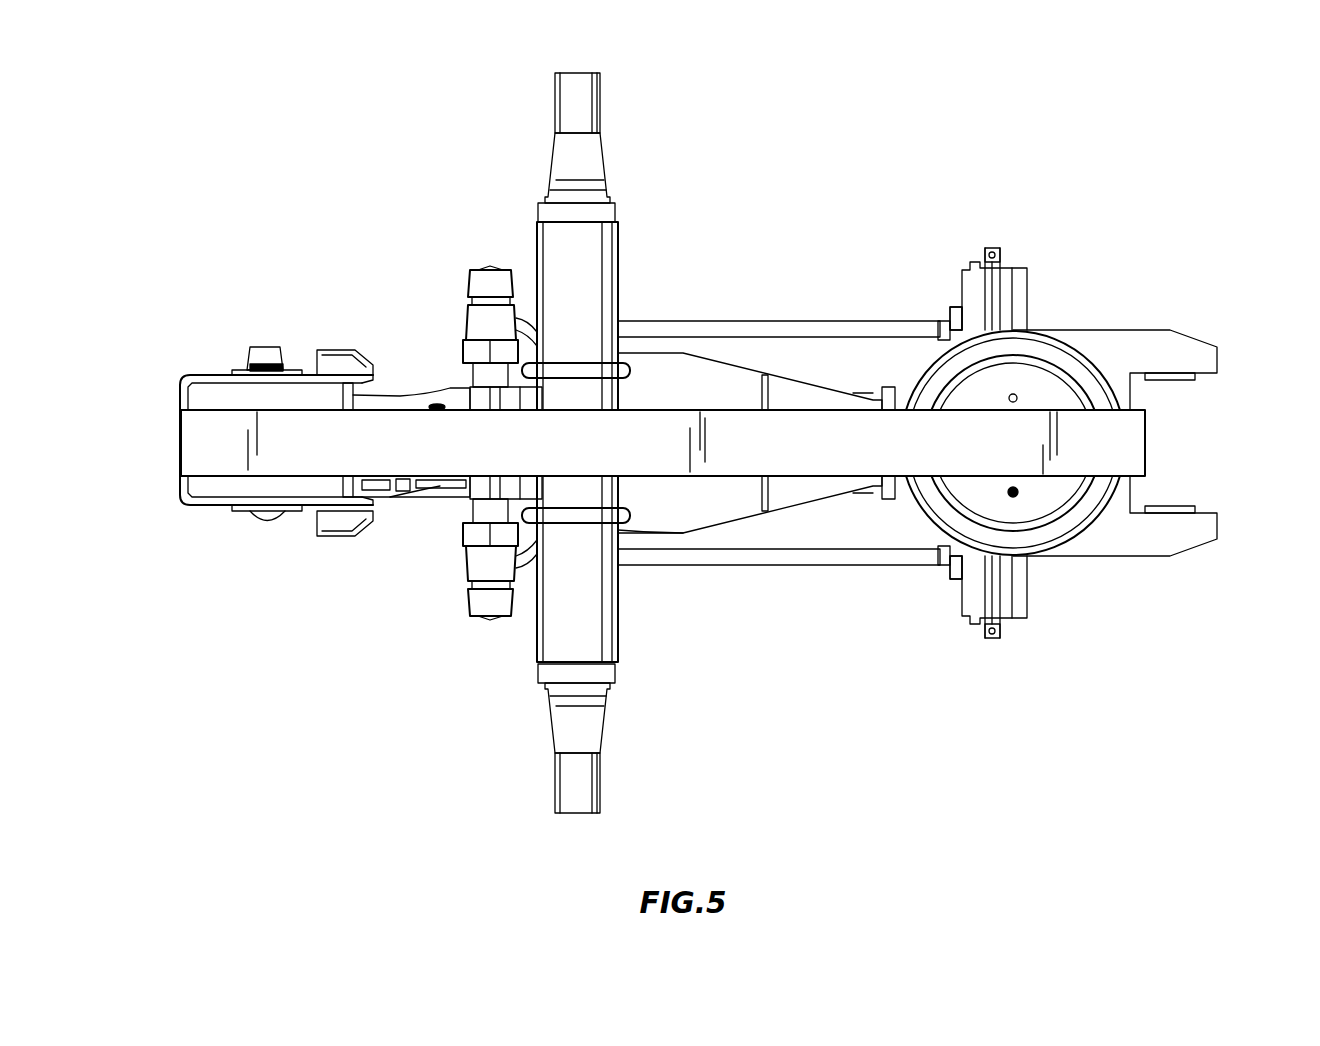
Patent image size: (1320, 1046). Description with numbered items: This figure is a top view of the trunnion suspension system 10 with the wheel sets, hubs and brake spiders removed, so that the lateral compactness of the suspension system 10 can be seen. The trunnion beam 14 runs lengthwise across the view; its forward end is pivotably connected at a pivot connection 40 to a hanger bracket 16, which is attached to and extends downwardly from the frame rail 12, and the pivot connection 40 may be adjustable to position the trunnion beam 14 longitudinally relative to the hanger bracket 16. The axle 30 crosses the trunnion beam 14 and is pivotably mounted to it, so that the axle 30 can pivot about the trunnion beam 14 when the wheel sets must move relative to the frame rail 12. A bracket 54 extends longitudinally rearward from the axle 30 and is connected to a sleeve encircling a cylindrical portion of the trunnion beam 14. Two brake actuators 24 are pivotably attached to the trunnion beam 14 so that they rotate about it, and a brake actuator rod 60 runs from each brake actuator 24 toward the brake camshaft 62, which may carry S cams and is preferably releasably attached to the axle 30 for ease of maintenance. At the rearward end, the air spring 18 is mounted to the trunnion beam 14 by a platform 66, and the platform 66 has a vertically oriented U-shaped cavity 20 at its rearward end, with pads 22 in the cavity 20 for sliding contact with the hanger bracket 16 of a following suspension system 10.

The suspension system 10 is at (947, 735).
The frame rail 12 is at (720, 482).
The trunnion beam 14 is at (420, 388).
The hanger bracket 16 is at (205, 372).
The air spring 18 is at (1080, 350).
The U-shaped cavity 20 is at (1165, 437).
The pads 22 is at (1190, 380).
The brake actuator 24 is at (1010, 272).
The axle 30 is at (625, 262).
The pivot connection 40 is at (265, 522).
The bracket 54 is at (790, 490).
The brake actuator rod 60 is at (822, 320).
The brake camshaft 62 is at (466, 315).
The platform 66 is at (1133, 547).